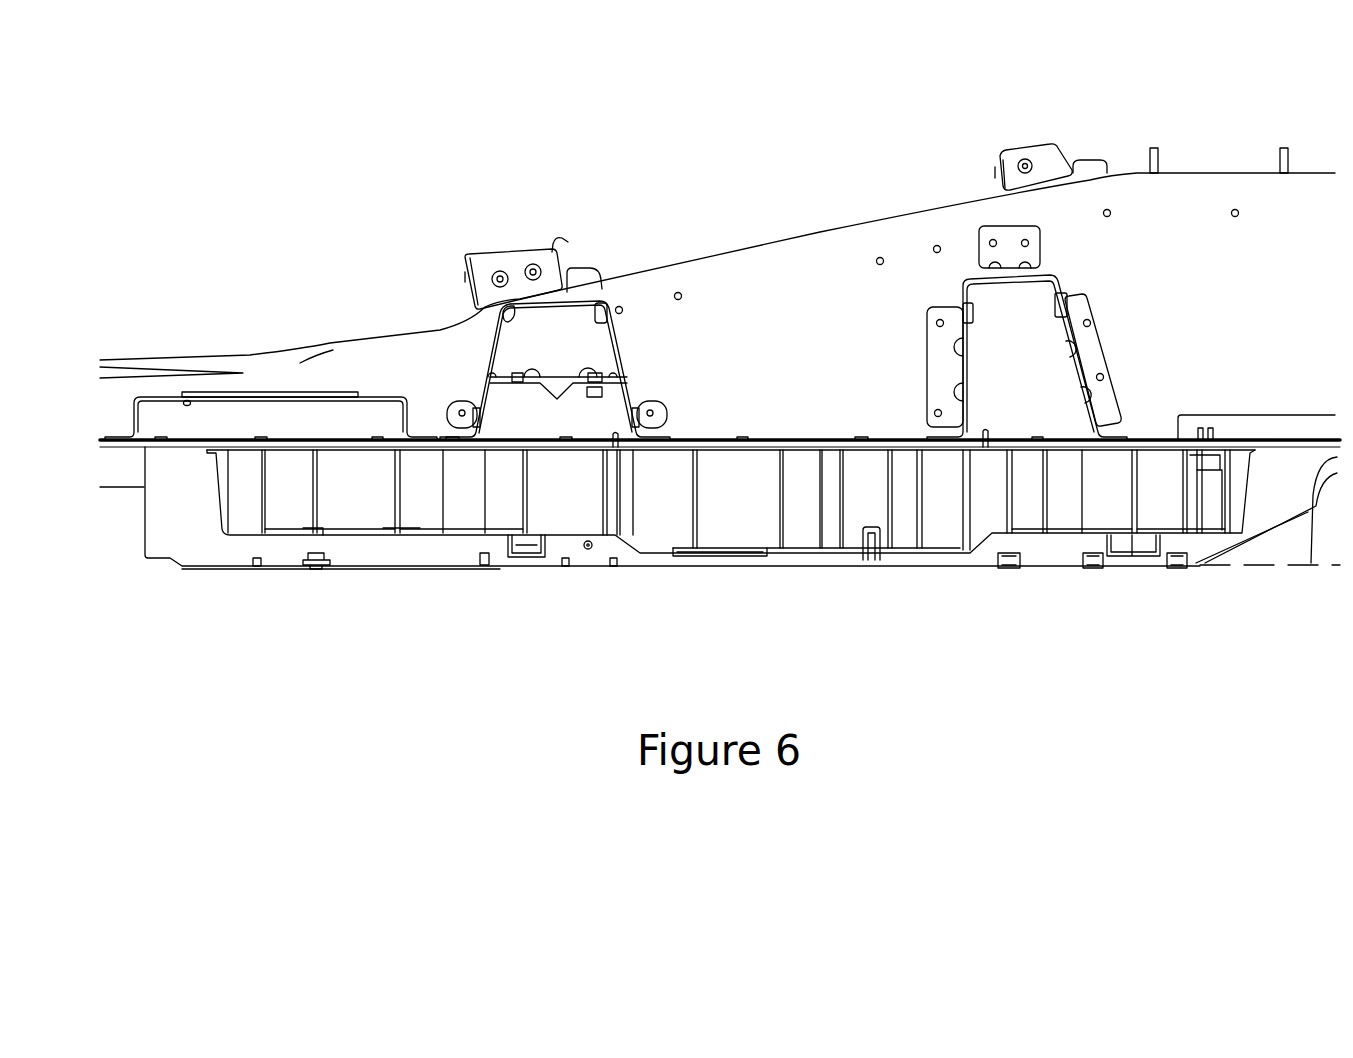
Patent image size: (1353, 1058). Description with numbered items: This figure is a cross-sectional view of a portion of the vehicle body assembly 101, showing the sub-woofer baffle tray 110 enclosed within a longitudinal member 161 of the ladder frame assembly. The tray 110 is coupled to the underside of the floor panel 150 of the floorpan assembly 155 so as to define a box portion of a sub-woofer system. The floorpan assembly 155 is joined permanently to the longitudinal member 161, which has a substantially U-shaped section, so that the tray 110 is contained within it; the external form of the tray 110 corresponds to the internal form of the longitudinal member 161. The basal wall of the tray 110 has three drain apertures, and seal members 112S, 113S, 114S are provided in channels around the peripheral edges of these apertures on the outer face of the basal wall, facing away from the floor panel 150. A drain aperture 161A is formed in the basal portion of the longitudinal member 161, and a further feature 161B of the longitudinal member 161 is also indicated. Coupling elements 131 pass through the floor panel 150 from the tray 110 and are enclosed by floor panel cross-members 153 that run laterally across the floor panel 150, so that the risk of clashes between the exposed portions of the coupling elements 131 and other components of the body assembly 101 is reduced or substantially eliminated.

The vehicle body assembly 101 is at (217, 296).
The sub-woofer baffle tray 110 is at (247, 522).
The seal member 112S is at (523, 560).
The seal member 113S is at (715, 557).
The seal member 114S is at (1153, 560).
The coupling element 131 is at (966, 430).
The floor panel 150 is at (186, 444).
The floor panel cross-member 153 is at (603, 302).
The floorpan assembly 155 is at (973, 210).
The longitudinal member 161 is at (595, 568).
The drain aperture 161A is at (363, 568).
The rail flange 161B is at (440, 568).